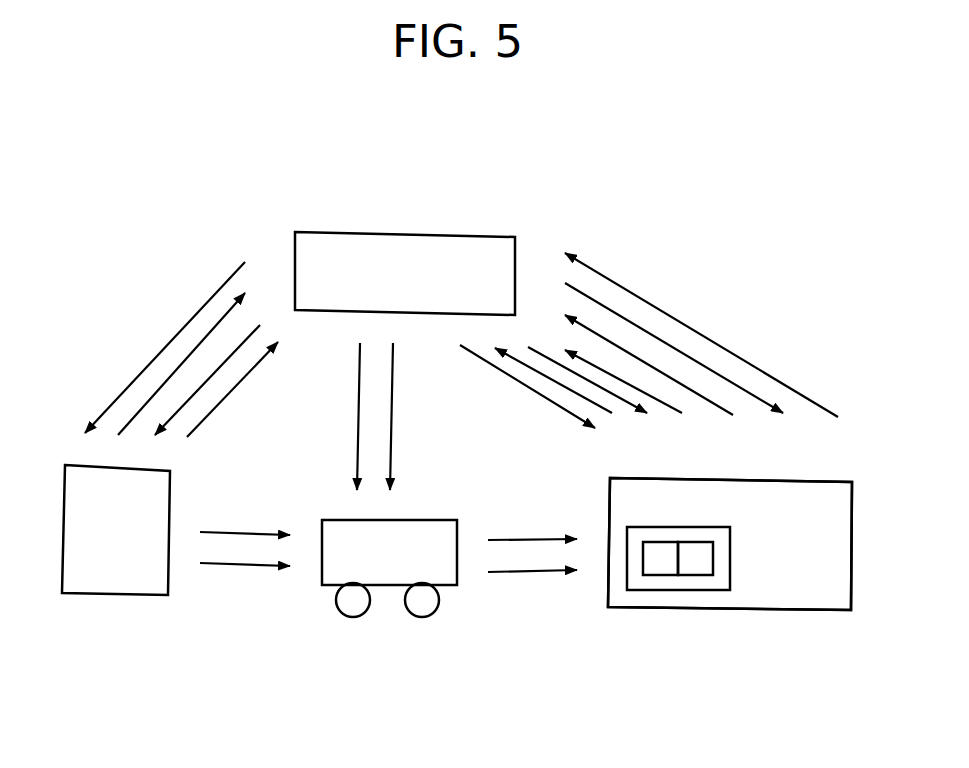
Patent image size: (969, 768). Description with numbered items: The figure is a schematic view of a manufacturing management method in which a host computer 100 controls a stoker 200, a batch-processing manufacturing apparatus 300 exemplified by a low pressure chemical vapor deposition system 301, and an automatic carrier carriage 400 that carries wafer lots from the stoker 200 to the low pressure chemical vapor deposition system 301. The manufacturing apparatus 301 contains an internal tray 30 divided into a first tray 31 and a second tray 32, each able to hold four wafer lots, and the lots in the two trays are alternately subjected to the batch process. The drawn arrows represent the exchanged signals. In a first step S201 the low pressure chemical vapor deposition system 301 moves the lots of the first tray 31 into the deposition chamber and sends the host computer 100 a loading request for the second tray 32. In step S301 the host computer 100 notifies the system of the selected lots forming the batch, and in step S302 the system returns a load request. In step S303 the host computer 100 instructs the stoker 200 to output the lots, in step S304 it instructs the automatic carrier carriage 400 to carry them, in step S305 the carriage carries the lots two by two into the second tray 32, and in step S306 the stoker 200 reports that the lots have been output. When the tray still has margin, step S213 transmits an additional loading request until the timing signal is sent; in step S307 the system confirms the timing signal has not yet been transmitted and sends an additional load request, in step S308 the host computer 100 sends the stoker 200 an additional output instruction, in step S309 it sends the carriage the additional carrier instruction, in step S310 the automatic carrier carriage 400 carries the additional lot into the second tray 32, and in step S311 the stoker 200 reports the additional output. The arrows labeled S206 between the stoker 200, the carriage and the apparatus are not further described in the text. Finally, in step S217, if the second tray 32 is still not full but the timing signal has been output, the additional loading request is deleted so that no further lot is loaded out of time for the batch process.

The host computer 100 is at (411, 232).
The stoker 200 is at (147, 596).
The automatic carrier carriage 400 is at (385, 520).
The manufacturing apparatus 300 is at (730, 544).
The low pressure chemical vapor deposition system 301 is at (673, 478).
The internal tray 30 is at (730, 568).
The first tray 31 is at (690, 575).
The second tray 32 is at (655, 575).
The first step S201 is at (685, 323).
The step S206 is at (388, 524).
The twentieth step S213 is at (610, 368).
The thirtieth step S217 is at (527, 399).
The sixth step S301 is at (684, 362).
The seventh step S302 is at (633, 354).
The eighth step S303 is at (156, 361).
The ninth step S304 is at (412, 416).
The tenth step S305 is at (202, 353).
The eleventh step S306 is at (596, 393).
The twenty fourth step S307 is at (542, 367).
The twenty fifth step S308 is at (194, 393).
The twenty sixth step S309 is at (335, 416).
The twenty seventh step S310 is at (388, 580).
The twenty eighth step S311 is at (249, 378).